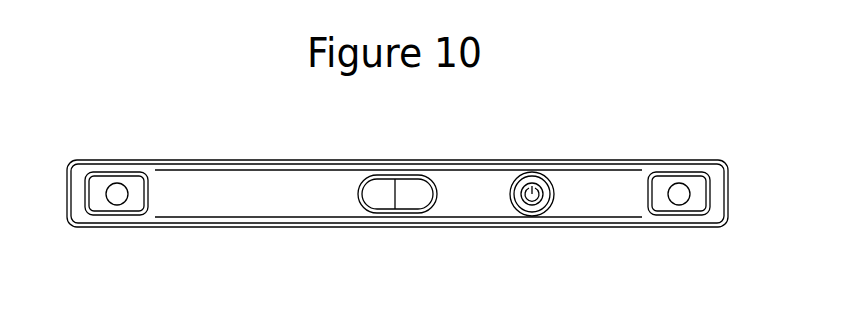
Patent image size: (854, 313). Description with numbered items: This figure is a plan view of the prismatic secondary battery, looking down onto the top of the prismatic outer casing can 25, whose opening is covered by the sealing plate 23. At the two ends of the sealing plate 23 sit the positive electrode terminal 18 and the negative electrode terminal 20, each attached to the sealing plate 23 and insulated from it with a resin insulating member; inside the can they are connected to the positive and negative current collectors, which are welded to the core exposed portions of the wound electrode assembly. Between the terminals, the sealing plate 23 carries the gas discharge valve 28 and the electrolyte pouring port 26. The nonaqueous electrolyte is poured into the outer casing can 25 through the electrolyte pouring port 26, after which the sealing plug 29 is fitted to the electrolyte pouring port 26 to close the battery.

The positive electrode terminal 18 is at (680, 196).
The negative electrode terminal 20 is at (117, 196).
The sealing plate 23 is at (472, 202).
The outer casing can 25 is at (277, 226).
The electrolyte pouring port 26 is at (533, 214).
The gas discharge valve 28 is at (385, 199).
The sealing plug 29 is at (531, 186).